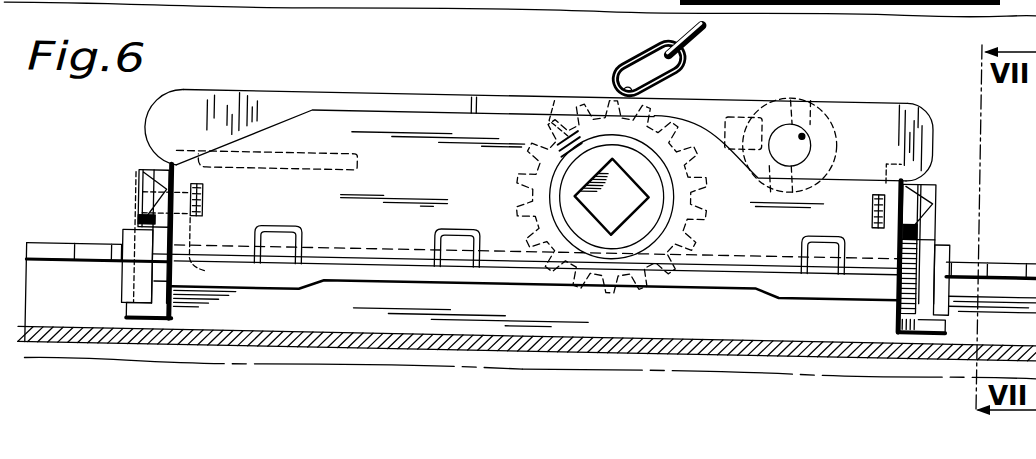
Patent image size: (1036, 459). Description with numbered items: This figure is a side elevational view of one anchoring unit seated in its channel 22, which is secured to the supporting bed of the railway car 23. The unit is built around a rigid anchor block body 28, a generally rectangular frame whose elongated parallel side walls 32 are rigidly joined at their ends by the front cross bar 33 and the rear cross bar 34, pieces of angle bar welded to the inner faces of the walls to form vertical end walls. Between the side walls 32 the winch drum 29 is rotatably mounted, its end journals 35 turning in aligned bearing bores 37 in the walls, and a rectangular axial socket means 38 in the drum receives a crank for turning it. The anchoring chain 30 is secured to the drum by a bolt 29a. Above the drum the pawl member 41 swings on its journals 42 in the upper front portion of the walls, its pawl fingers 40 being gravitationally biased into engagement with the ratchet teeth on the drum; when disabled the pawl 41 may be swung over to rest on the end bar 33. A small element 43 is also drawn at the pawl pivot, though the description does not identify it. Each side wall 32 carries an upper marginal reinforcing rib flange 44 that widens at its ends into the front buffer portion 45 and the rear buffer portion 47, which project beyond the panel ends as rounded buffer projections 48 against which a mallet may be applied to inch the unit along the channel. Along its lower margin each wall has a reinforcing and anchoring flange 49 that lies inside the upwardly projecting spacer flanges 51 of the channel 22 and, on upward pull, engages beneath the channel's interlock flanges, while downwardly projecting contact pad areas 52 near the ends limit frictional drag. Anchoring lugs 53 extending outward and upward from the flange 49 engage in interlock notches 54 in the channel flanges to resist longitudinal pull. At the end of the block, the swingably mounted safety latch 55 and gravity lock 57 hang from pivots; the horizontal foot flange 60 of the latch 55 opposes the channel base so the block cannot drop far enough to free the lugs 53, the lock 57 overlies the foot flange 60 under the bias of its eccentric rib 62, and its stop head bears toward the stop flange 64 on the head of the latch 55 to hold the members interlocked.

The channel 22 is at (200, 5).
The railway car 23 is at (350, 370).
The anchor block body 28 is at (370, 107).
The winch drum 29 is at (680, 198).
The bolt 29a is at (553, 116).
The anchoring chain 30 is at (693, 52).
The side walls 32 is at (480, 176).
The front cross bar 33 is at (872, 188).
The rear cross bar 34 is at (248, 175).
The journals 35 is at (650, 223).
The bearing bores 37 is at (660, 211).
The rectangular axial socket means 38 is at (627, 175).
The pawl fingers 40 is at (673, 114).
The pawl member 41 is at (836, 95).
The journals 42 is at (800, 144).
The pin 43 is at (807, 130).
The reinforcing rib flange 44 is at (453, 100).
The front end buffer portion 45 is at (848, 104).
The rear end buffer portion 47 is at (187, 106).
The buffer projections 48 is at (143, 128).
The reinforcing and anchoring flange 49 is at (518, 275).
The spacer flanges 51 is at (43, 291).
The contact pad areas 52 is at (255, 293).
The anchoring lugs 53 is at (283, 244).
The interlock notches 54 is at (90, 260).
The safety latch 55 is at (155, 288).
The gravity lock 57 is at (147, 298).
The foot flange 60 is at (132, 321).
The rib 62 is at (123, 286).
The stop flange 64 is at (152, 177).